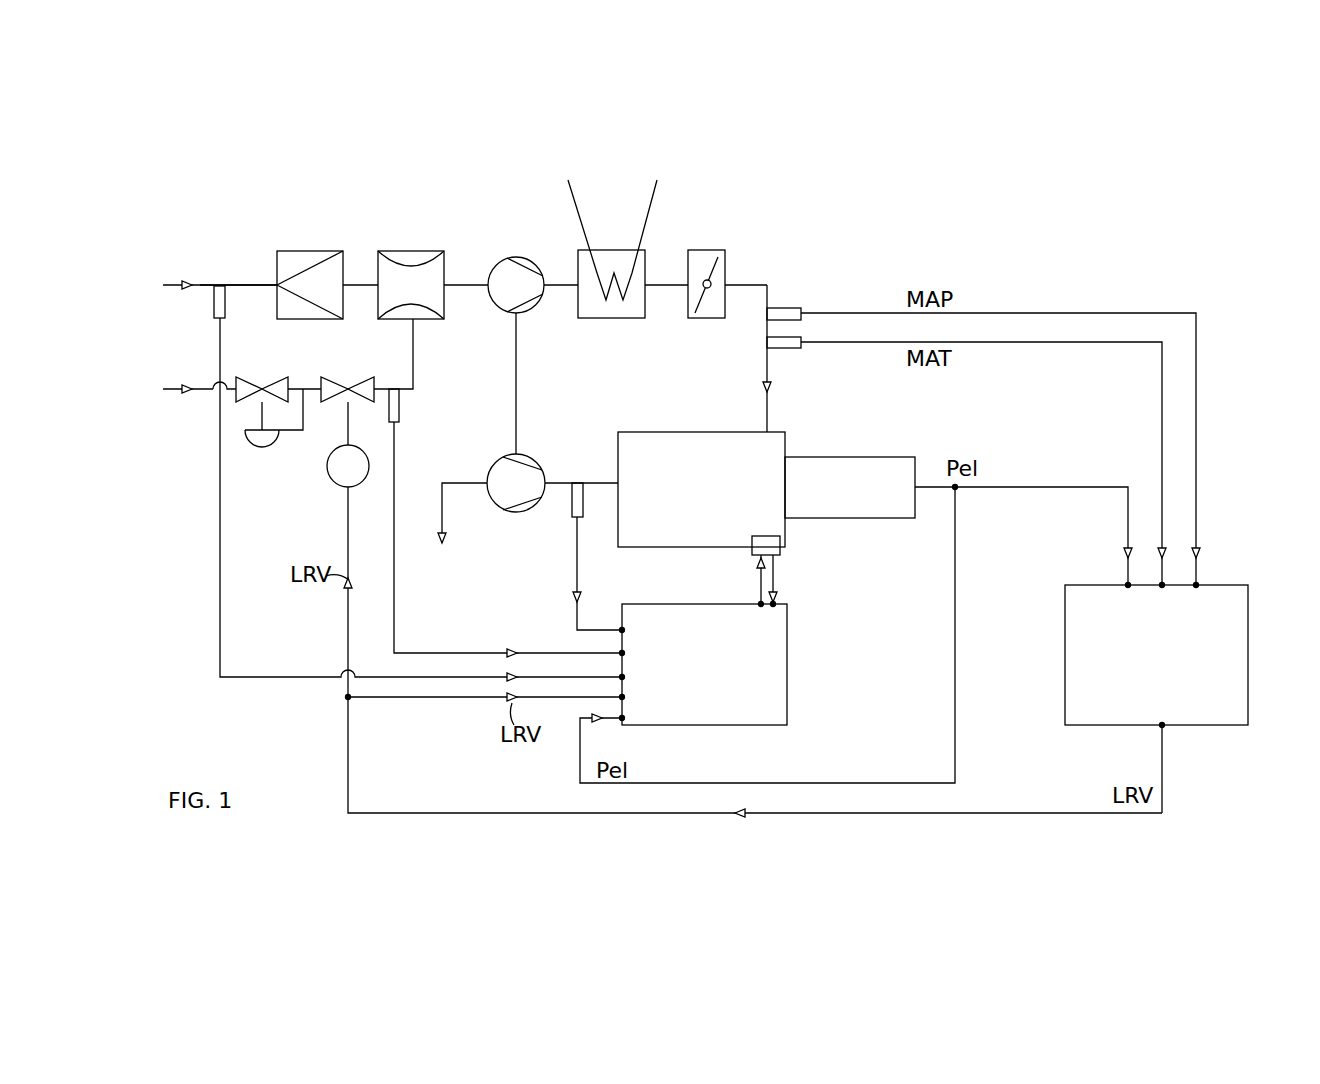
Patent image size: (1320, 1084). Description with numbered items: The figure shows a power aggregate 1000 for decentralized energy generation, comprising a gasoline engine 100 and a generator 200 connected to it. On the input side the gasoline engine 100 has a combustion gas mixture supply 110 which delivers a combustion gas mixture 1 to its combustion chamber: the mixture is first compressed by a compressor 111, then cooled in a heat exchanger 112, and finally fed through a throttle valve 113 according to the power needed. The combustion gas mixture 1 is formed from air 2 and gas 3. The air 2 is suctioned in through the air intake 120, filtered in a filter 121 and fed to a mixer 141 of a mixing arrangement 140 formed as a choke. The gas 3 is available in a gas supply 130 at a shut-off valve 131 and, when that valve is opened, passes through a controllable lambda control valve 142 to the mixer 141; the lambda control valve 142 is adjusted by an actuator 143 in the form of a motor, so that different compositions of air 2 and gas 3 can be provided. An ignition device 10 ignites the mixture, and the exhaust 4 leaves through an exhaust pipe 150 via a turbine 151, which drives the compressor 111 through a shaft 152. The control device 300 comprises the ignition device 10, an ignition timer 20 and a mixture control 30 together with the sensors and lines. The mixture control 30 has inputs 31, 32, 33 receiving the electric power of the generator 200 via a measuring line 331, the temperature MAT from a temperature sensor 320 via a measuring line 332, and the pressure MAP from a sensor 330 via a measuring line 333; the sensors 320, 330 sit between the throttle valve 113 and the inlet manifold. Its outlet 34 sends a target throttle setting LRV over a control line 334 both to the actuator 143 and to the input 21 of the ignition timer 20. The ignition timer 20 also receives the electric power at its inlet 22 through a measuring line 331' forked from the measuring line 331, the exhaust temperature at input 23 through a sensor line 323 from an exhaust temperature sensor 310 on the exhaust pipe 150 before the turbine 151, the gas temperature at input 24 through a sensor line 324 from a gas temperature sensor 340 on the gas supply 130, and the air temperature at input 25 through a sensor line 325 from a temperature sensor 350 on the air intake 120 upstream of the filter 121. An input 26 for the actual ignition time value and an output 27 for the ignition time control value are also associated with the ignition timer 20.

The combustion gas mixture 1 is at (762, 384).
The air 2 is at (172, 284).
The gas 3 is at (172, 387).
The exhaust 4 is at (447, 534).
The ignition device 10 is at (782, 556).
The ignition timer 20 is at (669, 603).
The input 21 is at (624, 697).
The inlet 22 is at (624, 718).
The input 23 is at (624, 630).
The input 24 is at (624, 653).
The input 25 is at (624, 677).
The input for actual value of ignition time 26 is at (775, 605).
The output 27 is at (760, 606).
The mixture control 30 is at (1064, 689).
The input 31 is at (1126, 584).
The input 32 is at (1164, 584).
The input 33 is at (1198, 584).
The outlet 34 is at (1165, 728).
The gasoline engine 100 is at (666, 431).
The combustion gas mixture supply 110 is at (466, 284).
The compressor 111 is at (519, 256).
The heat exchanger 112 is at (612, 249).
The throttle valve 113 is at (707, 249).
The air intake 120 is at (252, 283).
The filter 121 is at (310, 250).
The gas supply 130 is at (198, 394).
The shut-off valve 131 is at (262, 388).
The mixing arrangement 140 is at (428, 360).
The mixer 141 is at (412, 250).
The lambda control valve 142 is at (348, 388).
The actuator 143 is at (327, 466).
The exhaust pipe 150 is at (600, 482).
The turbine 151 is at (530, 458).
The shaft 152 is at (518, 362).
The generator 200 is at (864, 456).
The control device 300 is at (1037, 431).
The exhaust temperature sensor 310 is at (566, 512).
The temperature sensor 320 is at (793, 350).
The sensor line 323 is at (576, 554).
The sensor line 324 is at (396, 606).
The sensor line 325 is at (250, 680).
The sensor 330 is at (789, 306).
The measuring line 331 is at (1023, 510).
The measuring line 331' is at (802, 635).
The measuring line 332 is at (1076, 344).
The measuring line 333 is at (1114, 312).
The control line 334 is at (346, 536).
The gas temperature sensor 340 is at (402, 415).
The temperature sensor 350 is at (226, 300).
The power aggregate 1000 is at (1130, 180).